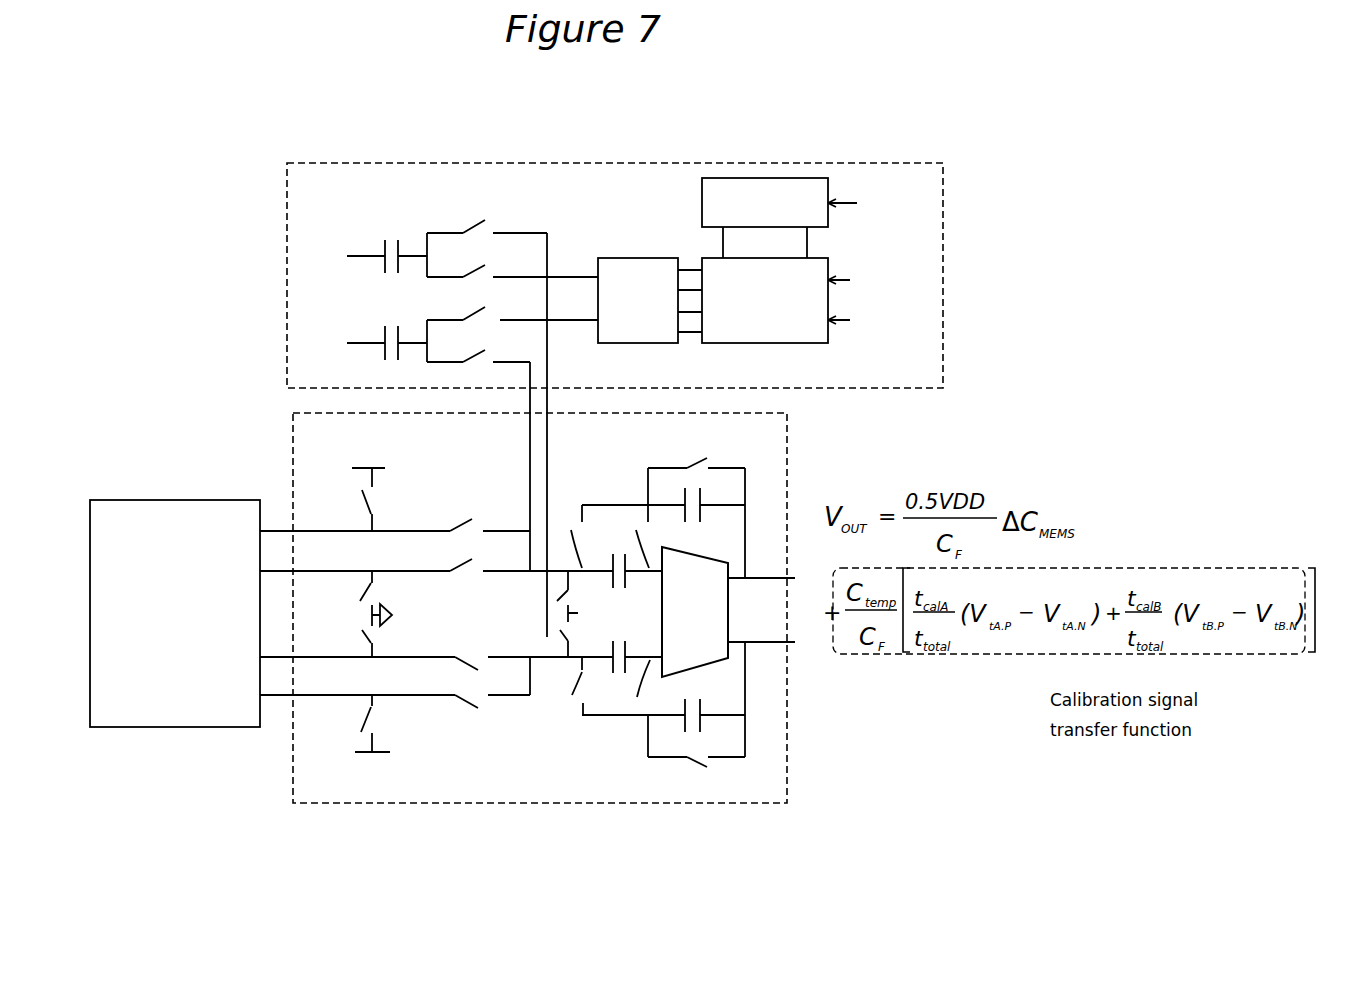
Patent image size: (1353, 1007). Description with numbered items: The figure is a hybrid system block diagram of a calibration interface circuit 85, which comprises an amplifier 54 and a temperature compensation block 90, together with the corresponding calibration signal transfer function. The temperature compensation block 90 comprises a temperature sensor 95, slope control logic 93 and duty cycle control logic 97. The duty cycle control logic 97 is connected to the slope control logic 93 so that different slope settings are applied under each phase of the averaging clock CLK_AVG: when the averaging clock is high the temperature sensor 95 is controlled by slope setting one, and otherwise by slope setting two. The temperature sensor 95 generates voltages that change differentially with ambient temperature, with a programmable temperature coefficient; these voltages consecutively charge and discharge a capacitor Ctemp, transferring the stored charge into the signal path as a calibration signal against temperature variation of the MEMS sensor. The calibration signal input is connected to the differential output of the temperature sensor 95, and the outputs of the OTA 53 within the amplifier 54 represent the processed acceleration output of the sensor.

The OTA 53 is at (713, 637).
The amplifier 54 is at (775, 787).
The calibration interface circuit 85 is at (1020, 402).
The temperature compensation block 90 is at (930, 173).
The slope control logic 93 is at (808, 337).
The temperature sensor 95 is at (640, 257).
The duty cycle control logic 97 is at (810, 190).